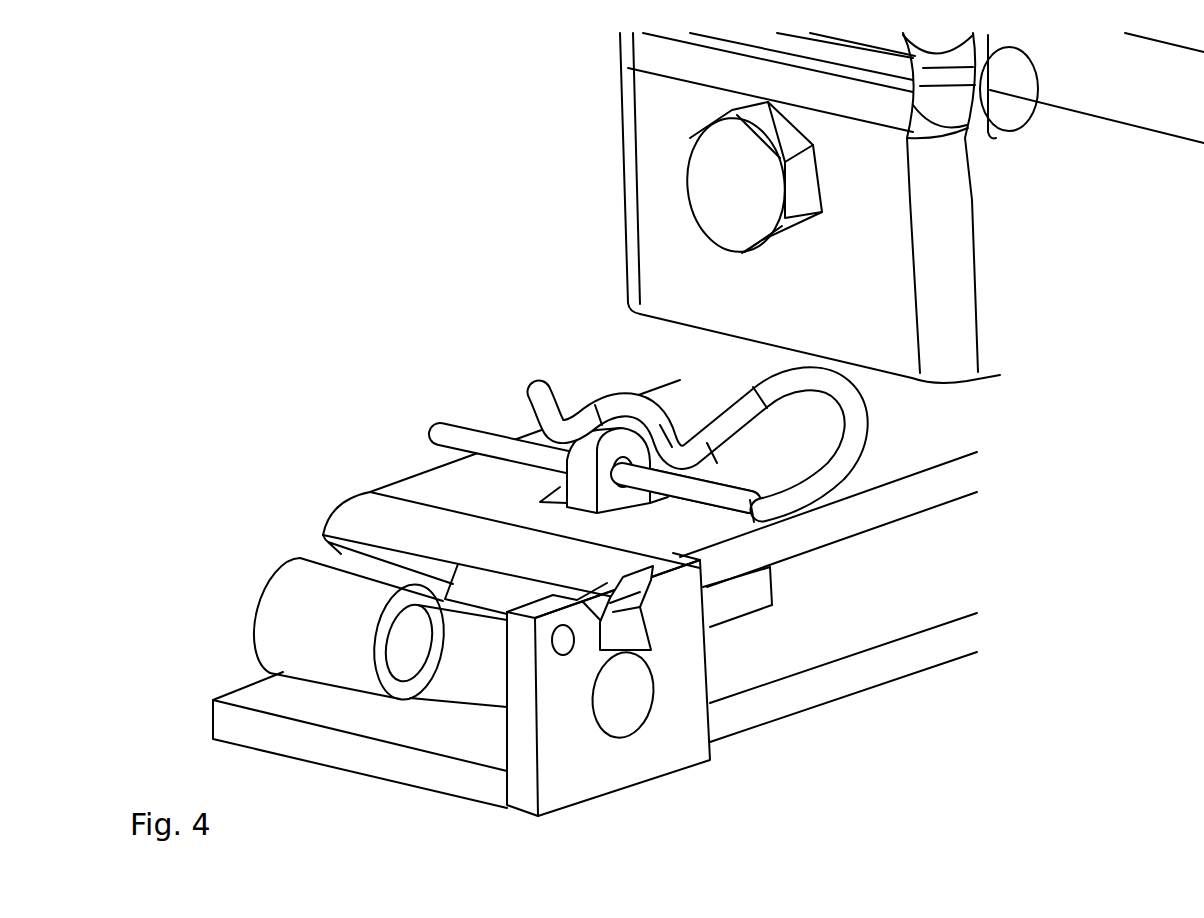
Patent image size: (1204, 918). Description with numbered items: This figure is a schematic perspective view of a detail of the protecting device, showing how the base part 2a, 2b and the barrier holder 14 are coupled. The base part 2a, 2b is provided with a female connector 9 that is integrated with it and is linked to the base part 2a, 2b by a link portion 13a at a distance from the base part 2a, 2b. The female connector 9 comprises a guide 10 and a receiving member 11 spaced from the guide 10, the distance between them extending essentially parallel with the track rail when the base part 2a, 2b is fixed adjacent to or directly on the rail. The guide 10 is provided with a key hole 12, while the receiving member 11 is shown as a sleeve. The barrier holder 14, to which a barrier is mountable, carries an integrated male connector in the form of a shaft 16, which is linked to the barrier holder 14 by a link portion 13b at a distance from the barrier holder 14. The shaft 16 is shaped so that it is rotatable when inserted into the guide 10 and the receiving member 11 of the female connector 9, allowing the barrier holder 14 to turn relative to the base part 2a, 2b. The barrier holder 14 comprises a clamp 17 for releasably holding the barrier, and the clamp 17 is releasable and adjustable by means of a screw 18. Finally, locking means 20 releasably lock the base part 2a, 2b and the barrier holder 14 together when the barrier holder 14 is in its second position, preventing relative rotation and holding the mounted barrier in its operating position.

The base part 2a is at (833, 637).
The base part 2b is at (936, 733).
The female connector 9 is at (338, 643).
The guide 10 is at (570, 733).
The receiving member 11 is at (287, 617).
The key hole 12 is at (625, 680).
The link portion 13a is at (722, 678).
The link portion 13b is at (477, 590).
The barrier holder 14 is at (877, 452).
The shaft 16 is at (467, 657).
The clamp 17 is at (657, 104).
The screw 18 is at (733, 182).
The locking means 20 is at (673, 490).